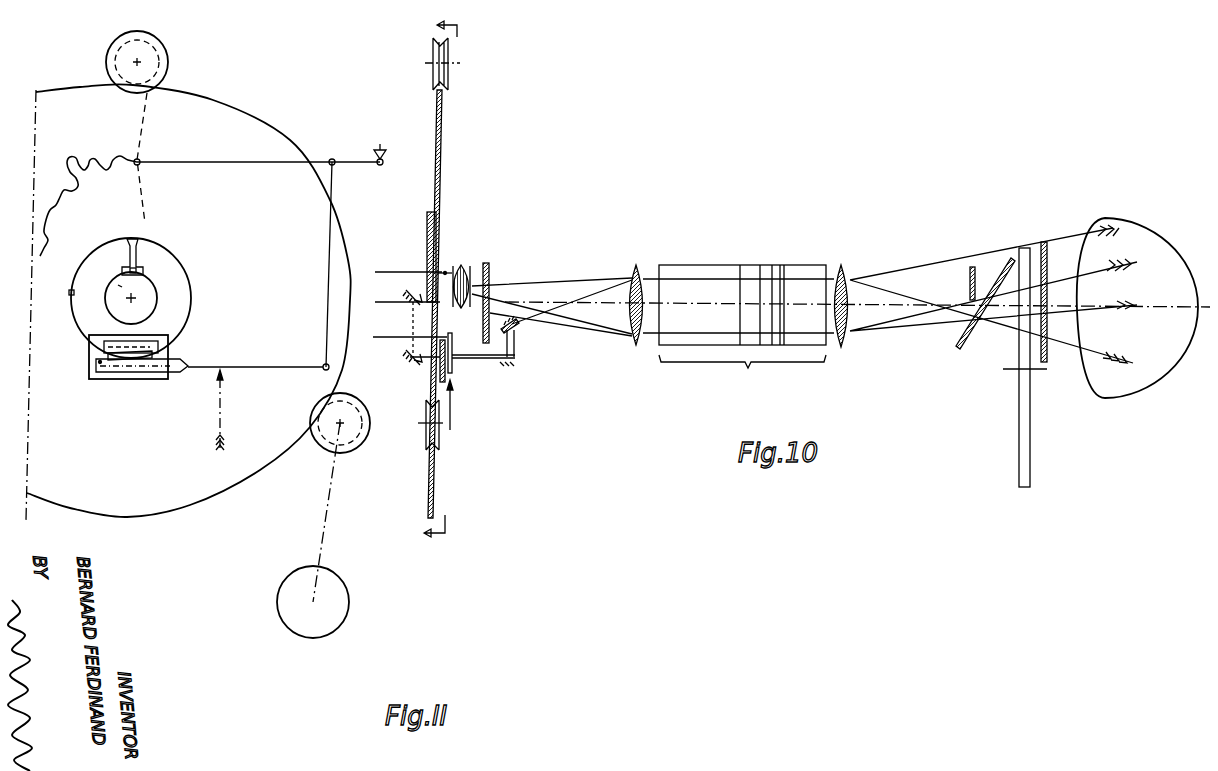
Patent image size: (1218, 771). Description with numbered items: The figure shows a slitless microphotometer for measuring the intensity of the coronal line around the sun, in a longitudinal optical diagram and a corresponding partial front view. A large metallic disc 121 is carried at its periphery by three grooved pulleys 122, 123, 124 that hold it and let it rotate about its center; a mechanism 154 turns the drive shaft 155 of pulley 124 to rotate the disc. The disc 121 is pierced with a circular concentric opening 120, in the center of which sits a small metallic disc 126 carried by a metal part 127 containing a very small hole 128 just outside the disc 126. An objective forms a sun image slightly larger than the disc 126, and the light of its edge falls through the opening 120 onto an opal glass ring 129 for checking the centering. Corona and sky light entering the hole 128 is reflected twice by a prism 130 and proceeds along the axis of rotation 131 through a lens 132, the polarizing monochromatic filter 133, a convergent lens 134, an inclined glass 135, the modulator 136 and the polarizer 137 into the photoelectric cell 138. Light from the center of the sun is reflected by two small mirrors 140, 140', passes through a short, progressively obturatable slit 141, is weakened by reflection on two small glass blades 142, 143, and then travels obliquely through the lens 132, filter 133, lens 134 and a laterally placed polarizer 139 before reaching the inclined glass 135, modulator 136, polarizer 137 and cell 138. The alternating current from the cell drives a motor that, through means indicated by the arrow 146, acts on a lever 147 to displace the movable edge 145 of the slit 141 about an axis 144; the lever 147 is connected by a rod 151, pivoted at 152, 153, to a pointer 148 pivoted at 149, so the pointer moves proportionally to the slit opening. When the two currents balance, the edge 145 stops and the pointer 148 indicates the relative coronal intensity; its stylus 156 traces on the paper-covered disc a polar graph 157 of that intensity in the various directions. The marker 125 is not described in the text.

In FIG. 11, the circular concentric opening 120 is at (174, 282).
In FIG. 11, the large metallic disc 121 is at (210, 107).
In FIG. 10, the large metallic disc 121 is at (441, 115).
In FIG. 11, the pulley 122 is at (146, 58).
In FIG. 10, the pulley 122 is at (449, 58).
In FIG. 10, the pulley 123 is at (427, 430).
In FIG. 11, the pulley 124 is at (352, 450).
In FIG. 11, the marker 125 is at (68, 293).
In FIG. 11, the small metallic disc 126 is at (118, 285).
In FIG. 10, the small metallic disc 126 is at (432, 319).
In FIG. 11, the metal part 127 is at (134, 252).
In FIG. 10, the metal part 127 is at (428, 237).
In FIG. 11, the hole 128 is at (140, 268).
In FIG. 10, the hole 128 is at (440, 262).
In FIG. 10, the opal glass ring 129 is at (489, 265).
In FIG. 10, the prism 130 is at (475, 262).
In FIG. 11, the axis of rotation 131 is at (131, 298).
In FIG. 10, the axis of rotation 131 is at (530, 300).
In FIG. 10, the lens 132 is at (638, 265).
In FIG. 10, the polarizing monochromatic filter 133 is at (738, 328).
In FIG. 10, the convergent lens 134 is at (844, 267).
In FIG. 10, the inclined glass 135 is at (1011, 259).
In FIG. 10, the modulator 136 is at (1024, 249).
In FIG. 10, the polarizer 137 is at (1044, 243).
In FIG. 10, the photoelectric cell 138 is at (1130, 243).
In FIG. 10, the polarizer 139 is at (972, 266).
In FIG. 10, the small mirror 140 is at (407, 288).
In FIG. 10, the small mirror 140' is at (406, 371).
In FIG. 11, the slit 141 is at (158, 350).
In FIG. 10, the slit 141 is at (458, 362).
In FIG. 10, the glass blade 142 is at (532, 372).
In FIG. 10, the glass blade 143 is at (517, 327).
In FIG. 11, the axis 144 is at (100, 362).
In FIG. 11, the movable edge 145 is at (162, 362).
In FIG. 10, the movable edge 145 is at (447, 363).
In FIG. 11, the arrow 146 is at (221, 398).
In FIG. 10, the arrow 146 is at (450, 405).
In FIG. 11, the lever 147 is at (246, 367).
In FIG. 11, the pointer 148 is at (258, 163).
In FIG. 11, the pivot 149 is at (382, 166).
In FIG. 11, the rod 151 is at (330, 248).
In FIG. 11, the pivot 152 is at (324, 364).
In FIG. 11, the pivot 153 is at (332, 159).
In FIG. 11, the mechanism 154 is at (285, 590).
In FIG. 11, the drive shaft 155 is at (327, 515).
In FIG. 11, the stylus 156 is at (141, 160).
In FIG. 11, the graph 157 is at (88, 203).